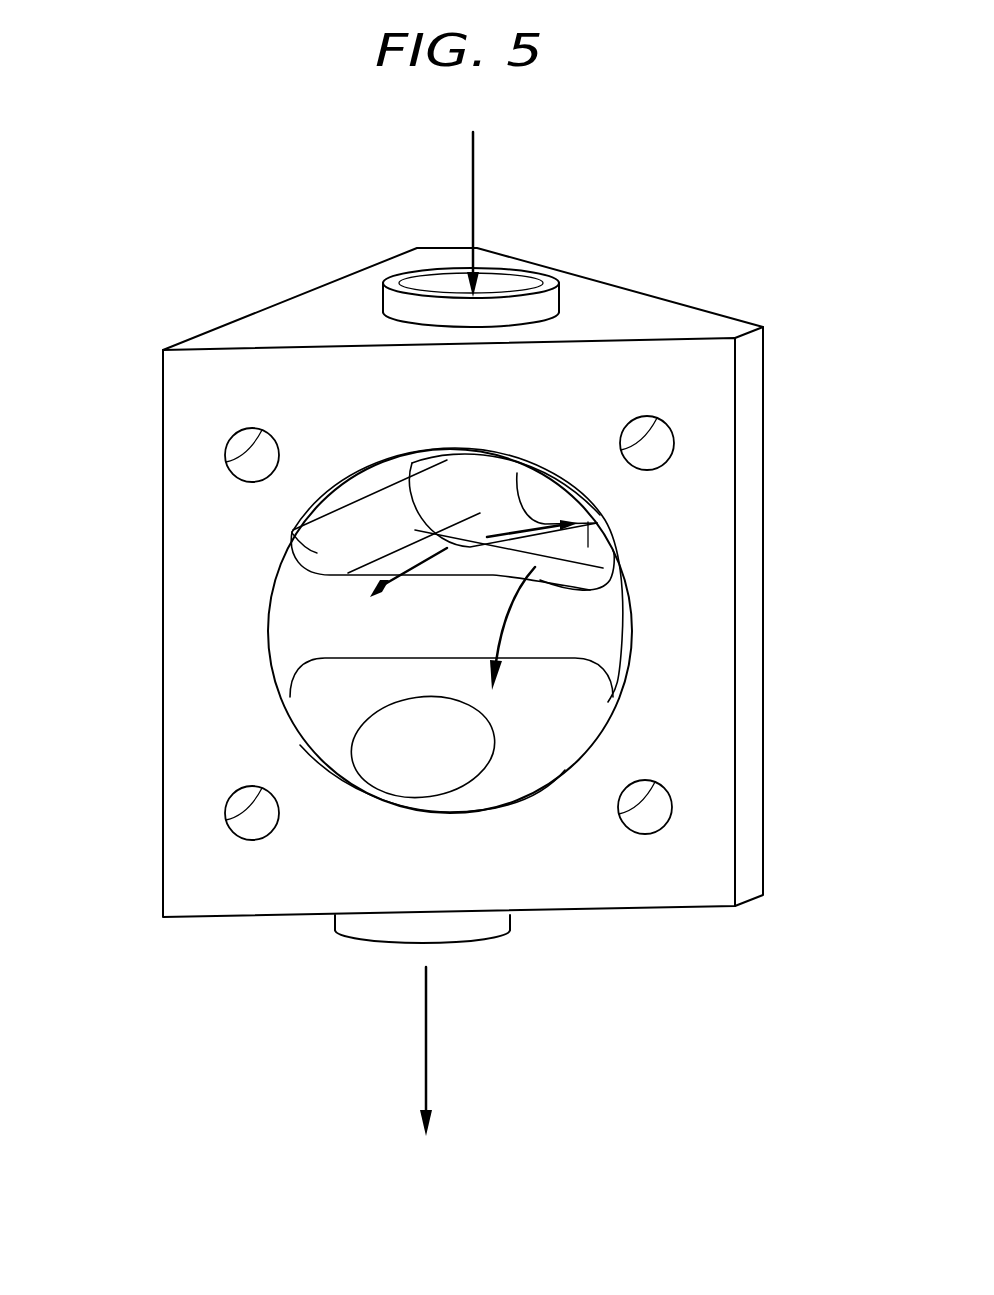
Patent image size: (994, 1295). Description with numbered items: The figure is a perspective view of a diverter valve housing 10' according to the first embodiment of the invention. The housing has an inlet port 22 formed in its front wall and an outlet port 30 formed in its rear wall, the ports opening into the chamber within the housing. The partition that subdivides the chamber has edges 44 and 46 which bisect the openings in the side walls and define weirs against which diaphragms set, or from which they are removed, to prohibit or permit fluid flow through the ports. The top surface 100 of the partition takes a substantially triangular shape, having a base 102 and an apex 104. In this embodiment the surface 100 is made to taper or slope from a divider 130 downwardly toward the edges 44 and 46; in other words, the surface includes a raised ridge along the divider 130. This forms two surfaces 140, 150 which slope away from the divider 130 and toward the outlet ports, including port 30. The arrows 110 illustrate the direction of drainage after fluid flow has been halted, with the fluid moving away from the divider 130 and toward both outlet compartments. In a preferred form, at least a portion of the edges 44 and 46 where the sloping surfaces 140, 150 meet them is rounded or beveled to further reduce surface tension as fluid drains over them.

The housing 10' is at (428, 553).
The inlet port 22 is at (517, 284).
The outlet port 30 is at (480, 938).
The edge 44 is at (292, 650).
The edge 46 is at (767, 490).
The surface 100 is at (485, 532).
The base 102 is at (292, 533).
The apex 104 is at (605, 588).
The arrows 110 is at (422, 565).
The divider 130 is at (603, 568).
The sloping surface 140 is at (618, 660).
The sloping surface 150 is at (590, 523).